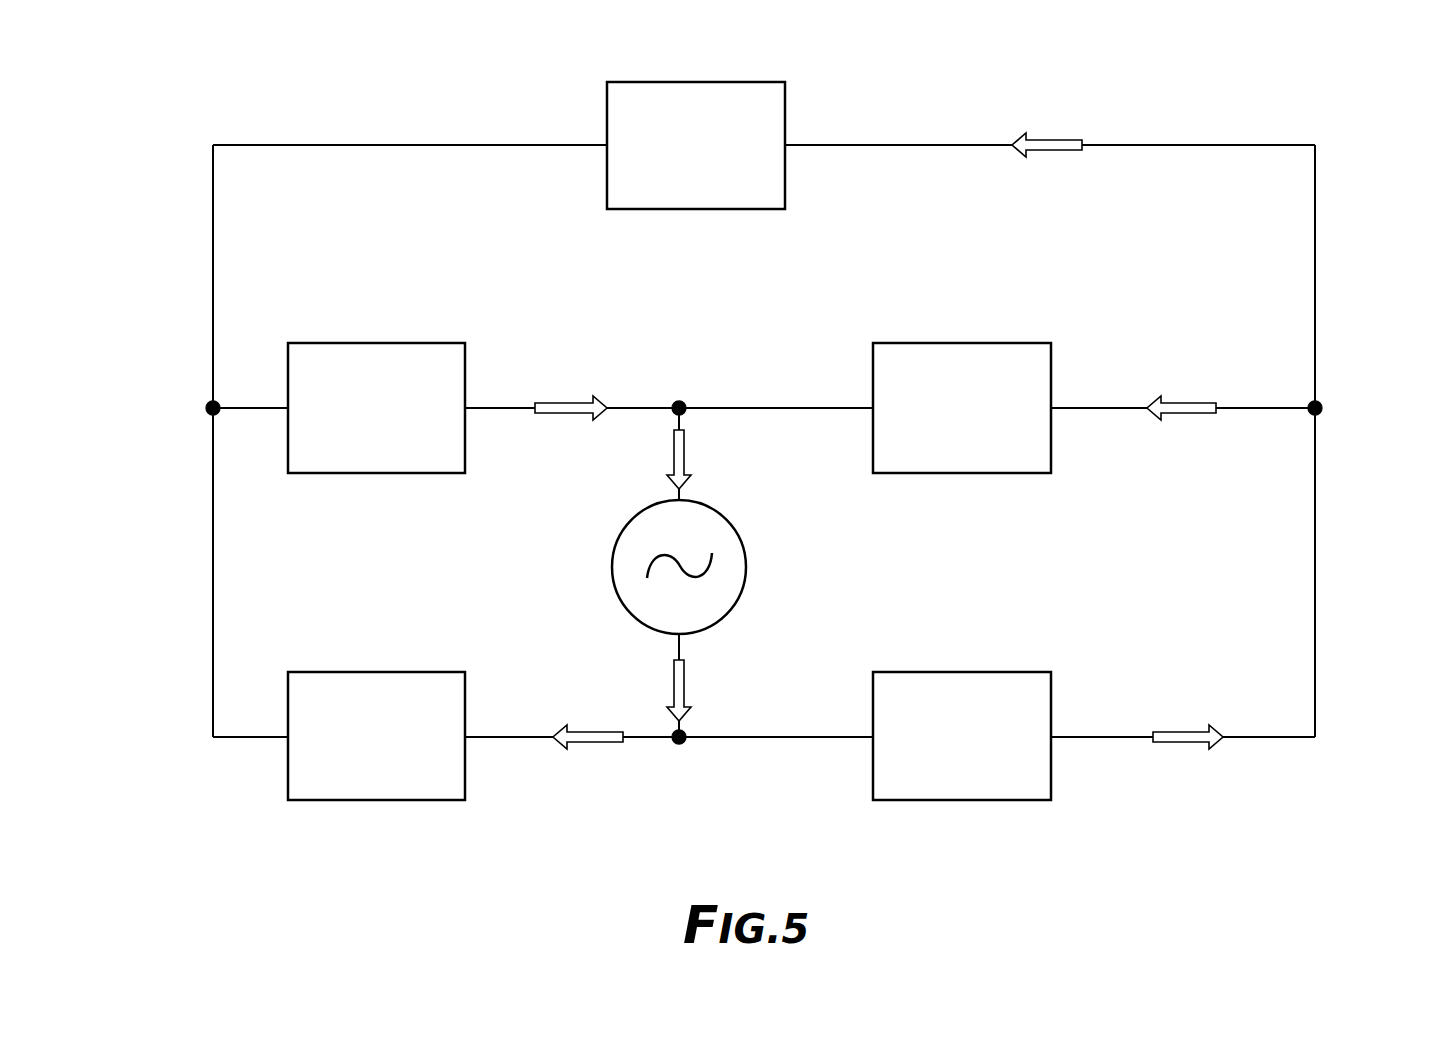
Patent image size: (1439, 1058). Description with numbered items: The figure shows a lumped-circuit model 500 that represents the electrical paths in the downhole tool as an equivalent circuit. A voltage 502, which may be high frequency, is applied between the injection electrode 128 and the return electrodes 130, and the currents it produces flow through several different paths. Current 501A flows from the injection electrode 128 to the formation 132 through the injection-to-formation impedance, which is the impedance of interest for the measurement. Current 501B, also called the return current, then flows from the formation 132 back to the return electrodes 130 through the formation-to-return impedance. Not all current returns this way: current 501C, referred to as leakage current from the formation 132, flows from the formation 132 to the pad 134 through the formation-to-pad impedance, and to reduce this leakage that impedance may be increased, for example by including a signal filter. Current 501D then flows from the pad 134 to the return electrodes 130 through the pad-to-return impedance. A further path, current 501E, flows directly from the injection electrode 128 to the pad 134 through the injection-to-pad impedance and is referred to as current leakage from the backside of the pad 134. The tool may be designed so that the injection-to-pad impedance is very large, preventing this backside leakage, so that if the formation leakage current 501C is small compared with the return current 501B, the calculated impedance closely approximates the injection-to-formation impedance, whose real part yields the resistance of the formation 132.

The lumped-circuit model 500 is at (180, 98).
The current 501A is at (1176, 752).
The current 501B is at (1197, 398).
The current 501C is at (1072, 157).
The current 501D is at (568, 398).
The current 501E is at (600, 747).
The voltage 502 is at (797, 552).
The injection electrode 128 is at (693, 778).
The return electrodes 130 is at (690, 360).
The formation 132 is at (1353, 393).
The pad 134 is at (175, 418).